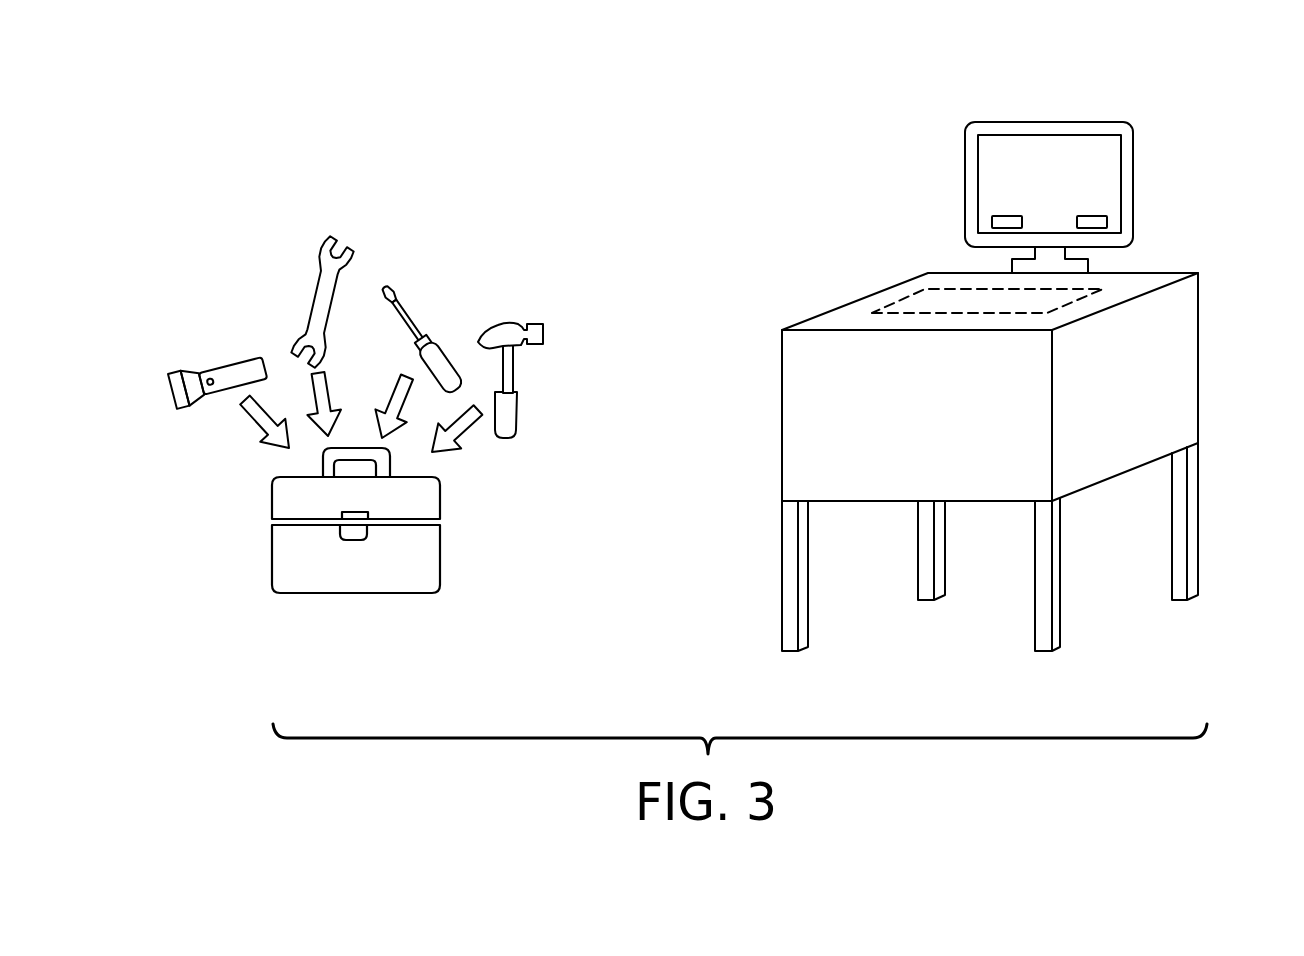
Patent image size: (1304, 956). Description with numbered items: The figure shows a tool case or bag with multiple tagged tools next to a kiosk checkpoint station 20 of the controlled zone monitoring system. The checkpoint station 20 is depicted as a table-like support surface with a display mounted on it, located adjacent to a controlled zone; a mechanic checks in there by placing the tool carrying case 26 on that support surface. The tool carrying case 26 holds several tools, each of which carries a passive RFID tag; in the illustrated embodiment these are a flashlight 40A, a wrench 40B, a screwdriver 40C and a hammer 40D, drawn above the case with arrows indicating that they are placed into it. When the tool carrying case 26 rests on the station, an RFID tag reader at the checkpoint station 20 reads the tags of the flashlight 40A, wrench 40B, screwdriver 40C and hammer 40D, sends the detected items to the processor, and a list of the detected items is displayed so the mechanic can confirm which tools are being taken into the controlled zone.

The kiosk checkpoint station 20 is at (1262, 157).
The tool bag or tool carrying case 26 is at (407, 562).
The flashlight 40A is at (224, 362).
The wrench 40B is at (320, 248).
The screwdriver 40C is at (413, 311).
The hammer 40D is at (510, 323).